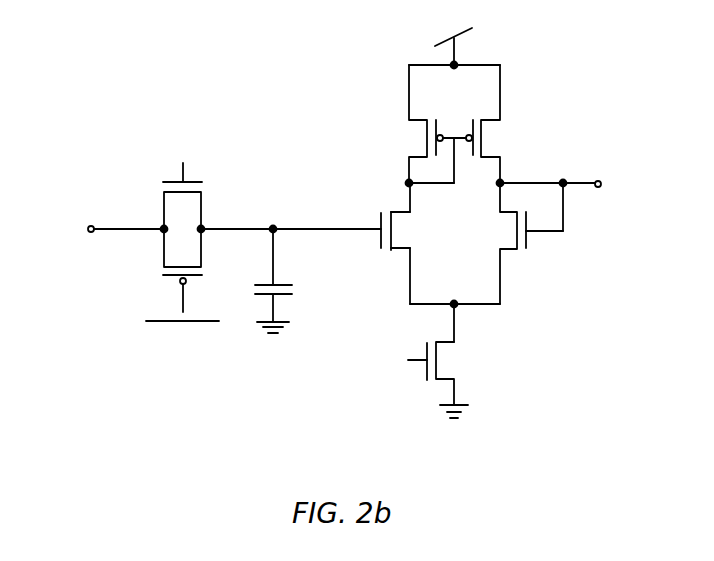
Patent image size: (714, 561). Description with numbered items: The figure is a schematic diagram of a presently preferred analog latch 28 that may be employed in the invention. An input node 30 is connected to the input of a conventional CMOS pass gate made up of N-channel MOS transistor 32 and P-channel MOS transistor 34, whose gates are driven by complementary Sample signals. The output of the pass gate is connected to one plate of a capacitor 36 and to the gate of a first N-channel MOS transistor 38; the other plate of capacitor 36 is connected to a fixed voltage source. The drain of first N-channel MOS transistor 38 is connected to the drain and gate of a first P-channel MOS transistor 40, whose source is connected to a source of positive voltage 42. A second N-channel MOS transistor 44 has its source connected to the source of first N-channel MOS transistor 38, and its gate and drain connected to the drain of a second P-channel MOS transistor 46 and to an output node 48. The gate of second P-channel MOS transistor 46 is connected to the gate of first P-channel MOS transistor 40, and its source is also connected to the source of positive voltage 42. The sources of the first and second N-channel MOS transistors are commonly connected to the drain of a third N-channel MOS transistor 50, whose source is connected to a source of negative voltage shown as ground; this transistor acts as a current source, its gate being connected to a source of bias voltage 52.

The analog latch 28 is at (587, 255).
The input node 30 is at (87, 227).
The N-channel MOS transistor 32 is at (205, 187).
The P-channel MOS transistor 34 is at (158, 272).
The capacitor 36 is at (297, 288).
The first N-channel MOS transistor 38 is at (413, 229).
The first P-channel MOS transistor 40 is at (405, 140).
The source of positive voltage 42 is at (480, 38).
The second N-channel MOS transistor 44 is at (522, 255).
The second P-channel MOS transistor 46 is at (503, 138).
The output node 48 is at (605, 185).
The third N-channel MOS transistor 50 is at (458, 358).
The source of bias voltage 52 is at (392, 383).